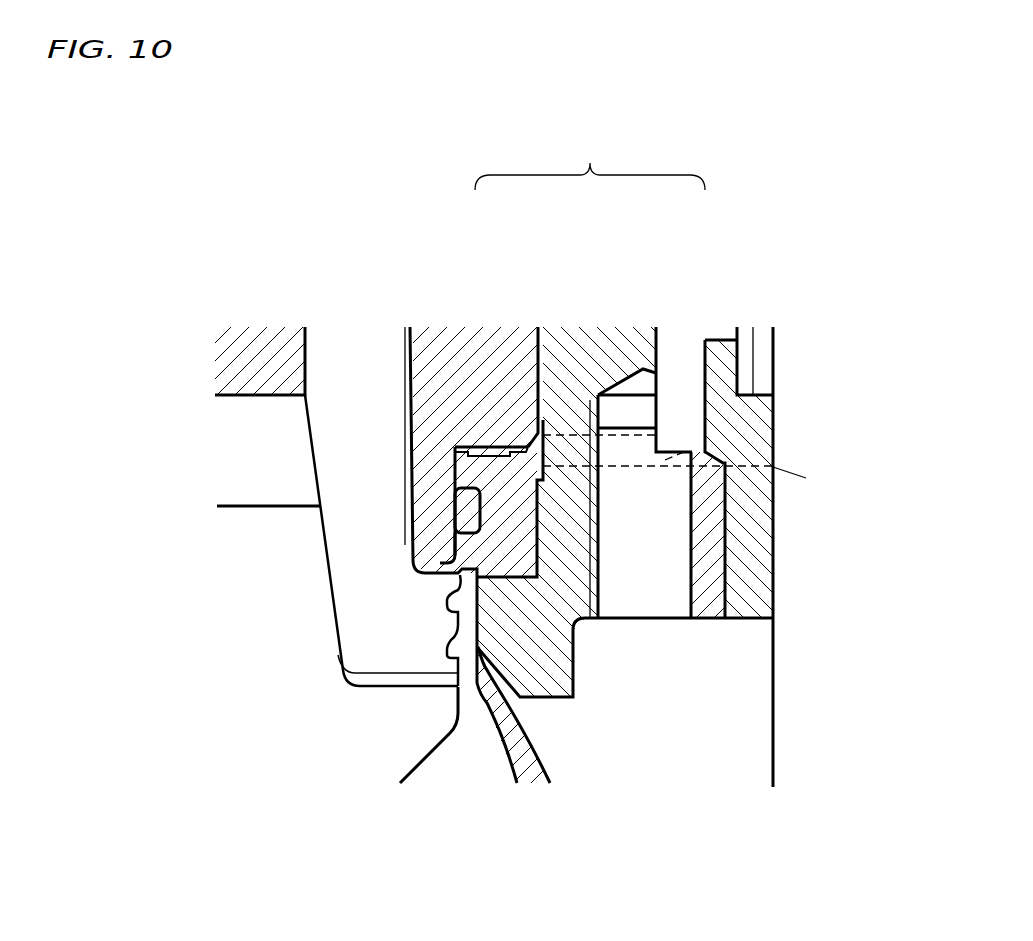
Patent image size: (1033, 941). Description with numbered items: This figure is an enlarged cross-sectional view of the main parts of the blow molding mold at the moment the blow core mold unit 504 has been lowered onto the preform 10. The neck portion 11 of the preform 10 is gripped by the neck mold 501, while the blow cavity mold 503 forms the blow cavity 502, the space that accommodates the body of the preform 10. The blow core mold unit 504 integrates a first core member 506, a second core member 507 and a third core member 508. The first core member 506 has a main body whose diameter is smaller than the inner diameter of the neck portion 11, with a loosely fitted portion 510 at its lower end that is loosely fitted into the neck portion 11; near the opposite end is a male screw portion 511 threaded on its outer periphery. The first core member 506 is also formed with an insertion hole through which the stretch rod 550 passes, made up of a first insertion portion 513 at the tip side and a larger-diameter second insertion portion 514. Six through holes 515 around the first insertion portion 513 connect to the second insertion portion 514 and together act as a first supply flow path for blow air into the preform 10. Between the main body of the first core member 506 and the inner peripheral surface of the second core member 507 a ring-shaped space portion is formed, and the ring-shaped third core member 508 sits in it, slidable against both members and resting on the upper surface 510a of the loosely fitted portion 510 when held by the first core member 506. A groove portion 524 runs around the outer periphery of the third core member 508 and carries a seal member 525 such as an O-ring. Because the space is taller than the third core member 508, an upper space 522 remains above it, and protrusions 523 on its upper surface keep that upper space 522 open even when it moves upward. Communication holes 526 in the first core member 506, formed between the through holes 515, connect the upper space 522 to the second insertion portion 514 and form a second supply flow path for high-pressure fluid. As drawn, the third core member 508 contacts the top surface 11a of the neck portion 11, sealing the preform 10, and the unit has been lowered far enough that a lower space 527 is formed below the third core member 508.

The preform 10 is at (550, 775).
The neck portion 11 is at (462, 625).
The top surface 11a is at (462, 572).
The neck mold 501 is at (368, 348).
The blow cavity 502 is at (700, 789).
The blow cavity mold 503 is at (423, 750).
The blow core mold unit 504 is at (590, 160).
The first core member 506 is at (620, 355).
The second core member 507 is at (425, 345).
The third core member 508 is at (545, 430).
The loosely fitted portion 510 is at (458, 688).
The upper surface 510a is at (507, 572).
The male screw portion 511 is at (768, 603).
The first insertion portion 513 is at (737, 590).
The second insertion portion 514 is at (678, 358).
The through holes 515 is at (645, 590).
The upper space 522 is at (455, 455).
The protrusions 523 is at (470, 447).
The groove portion 524 is at (455, 505).
The seal member 525 is at (455, 525).
The communication holes 526 is at (811, 482).
The lower space 527 is at (445, 588).
The stretch rod 550 is at (785, 755).